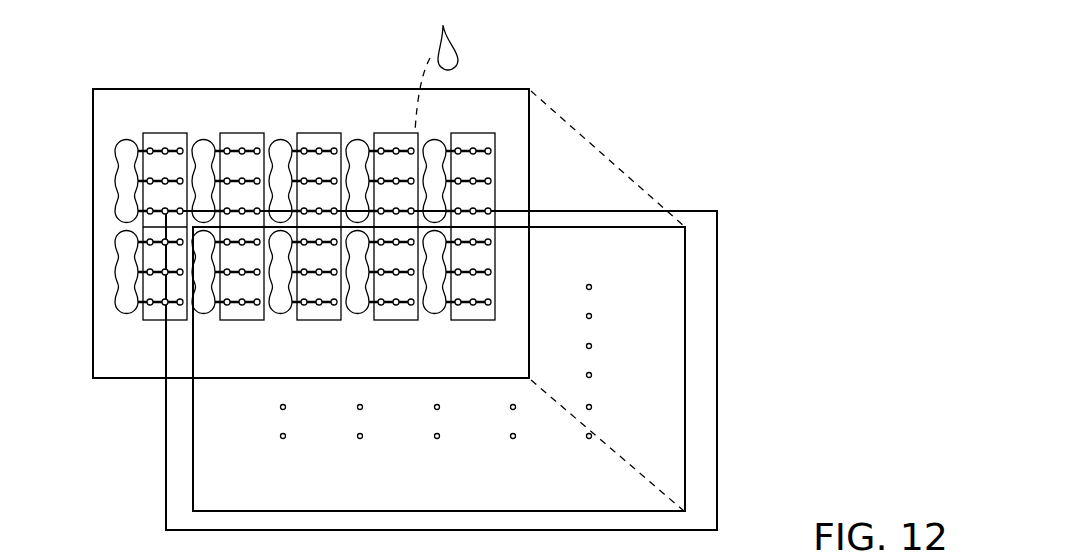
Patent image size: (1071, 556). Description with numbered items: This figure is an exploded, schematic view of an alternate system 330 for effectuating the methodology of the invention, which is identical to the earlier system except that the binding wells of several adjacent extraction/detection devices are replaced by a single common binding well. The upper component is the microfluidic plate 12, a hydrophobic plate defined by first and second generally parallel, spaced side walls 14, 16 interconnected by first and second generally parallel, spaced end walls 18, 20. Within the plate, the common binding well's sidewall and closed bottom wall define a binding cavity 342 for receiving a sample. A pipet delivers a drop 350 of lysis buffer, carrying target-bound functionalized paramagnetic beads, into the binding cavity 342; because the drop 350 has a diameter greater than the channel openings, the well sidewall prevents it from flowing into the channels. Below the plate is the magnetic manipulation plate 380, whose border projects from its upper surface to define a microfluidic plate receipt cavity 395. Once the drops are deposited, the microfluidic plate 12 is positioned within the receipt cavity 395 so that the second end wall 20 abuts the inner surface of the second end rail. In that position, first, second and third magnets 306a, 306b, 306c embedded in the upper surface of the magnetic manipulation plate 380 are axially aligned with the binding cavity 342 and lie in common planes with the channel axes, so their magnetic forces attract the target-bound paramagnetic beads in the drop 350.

The microfluidic plate 12 is at (87, 82).
The first side wall 14 is at (173, 88).
The second side wall 16 is at (137, 386).
The first end wall 18 is at (92, 197).
The second end wall 20 is at (531, 161).
The system 330 is at (86, 418).
The binding cavity 342 is at (423, 176).
The drop 350 is at (452, 52).
The magnetic manipulation plate 380 is at (733, 256).
The microfluidic plate receipt cavity 395 is at (672, 364).
The first magnet 306a is at (592, 287).
The second magnet 306b is at (592, 316).
The third magnet 306c is at (592, 346).